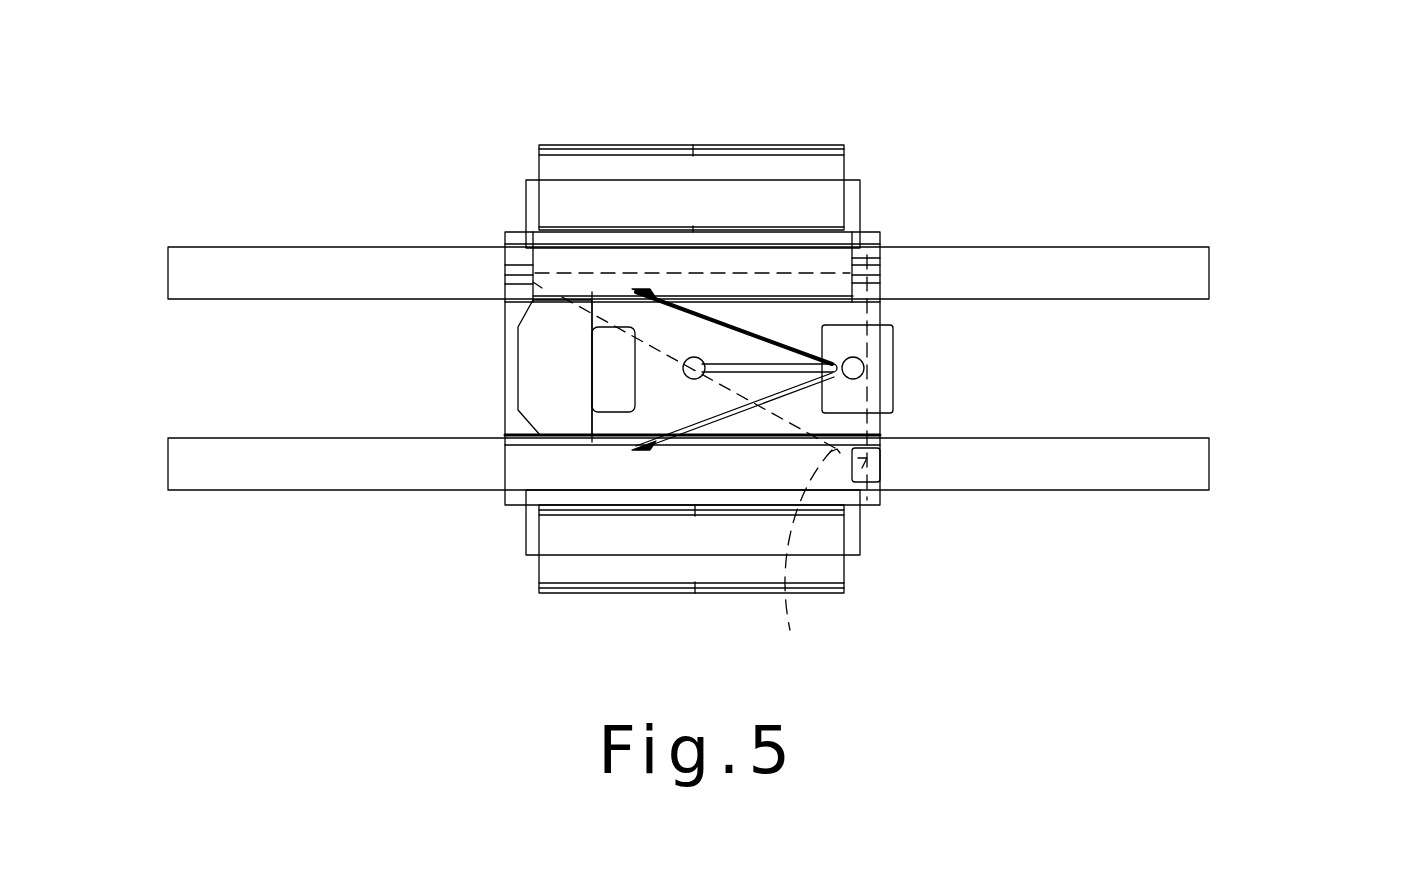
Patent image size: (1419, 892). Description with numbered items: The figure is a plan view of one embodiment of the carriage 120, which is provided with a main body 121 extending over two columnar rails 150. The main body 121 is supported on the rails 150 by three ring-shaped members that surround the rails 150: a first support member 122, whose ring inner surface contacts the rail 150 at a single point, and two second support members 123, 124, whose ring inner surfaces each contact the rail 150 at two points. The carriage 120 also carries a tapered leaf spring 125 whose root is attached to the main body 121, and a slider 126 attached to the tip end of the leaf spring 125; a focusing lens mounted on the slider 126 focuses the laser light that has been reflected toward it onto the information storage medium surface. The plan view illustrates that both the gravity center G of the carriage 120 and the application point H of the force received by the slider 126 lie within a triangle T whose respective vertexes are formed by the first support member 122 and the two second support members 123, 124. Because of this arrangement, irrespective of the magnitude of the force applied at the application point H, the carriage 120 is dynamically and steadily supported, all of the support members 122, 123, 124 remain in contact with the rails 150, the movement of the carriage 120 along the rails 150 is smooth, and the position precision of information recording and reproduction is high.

The carriage 120 is at (724, 349).
The main body 121 is at (505, 370).
The first support member 122 is at (872, 473).
The second support member 123 is at (872, 270).
The second support member 124 is at (515, 272).
The tapered leaf spring 125 is at (763, 484).
The slider 126 is at (890, 391).
The columnar rails 150 is at (1190, 468).
The gravity center G is at (688, 358).
The application point H is at (866, 362).
The triangle T is at (801, 560).